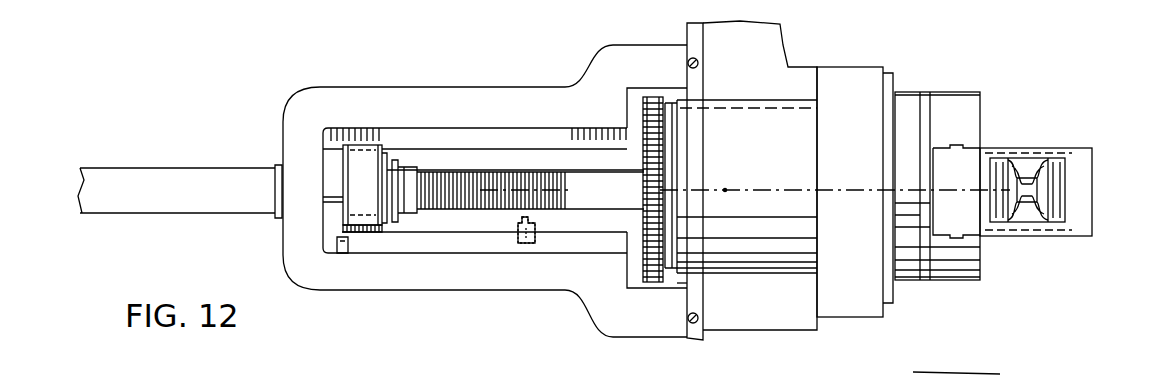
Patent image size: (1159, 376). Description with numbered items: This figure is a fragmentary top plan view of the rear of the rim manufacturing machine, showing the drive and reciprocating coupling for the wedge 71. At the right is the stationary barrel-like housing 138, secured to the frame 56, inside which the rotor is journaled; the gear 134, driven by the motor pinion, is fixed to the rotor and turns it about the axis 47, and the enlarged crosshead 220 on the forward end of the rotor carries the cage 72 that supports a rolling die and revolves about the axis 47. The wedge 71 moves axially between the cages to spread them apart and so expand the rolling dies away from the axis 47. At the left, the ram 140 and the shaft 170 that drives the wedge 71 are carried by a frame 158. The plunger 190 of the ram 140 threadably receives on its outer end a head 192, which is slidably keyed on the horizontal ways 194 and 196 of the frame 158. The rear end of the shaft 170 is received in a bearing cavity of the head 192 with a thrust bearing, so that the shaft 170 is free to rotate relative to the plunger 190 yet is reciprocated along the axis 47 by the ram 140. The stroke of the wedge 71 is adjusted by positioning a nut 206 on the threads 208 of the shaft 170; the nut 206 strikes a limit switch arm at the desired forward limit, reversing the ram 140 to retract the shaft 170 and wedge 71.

The axis 47 is at (727, 189).
The frame 56 is at (852, 306).
The reciprocating wedge 71 is at (1033, 153).
The cage 72 is at (1096, 194).
The gear 134 is at (654, 97).
The barrel-like housing 138 is at (780, 283).
The ram 140 is at (222, 204).
The frame 158 is at (350, 282).
The shaft 170 is at (582, 180).
The plunger 190 is at (335, 184).
The head 192 is at (370, 236).
The horizontal way 194 is at (457, 137).
The horizontal way 196 is at (562, 238).
The nut 206 is at (419, 167).
The threads 208 is at (435, 209).
The crosshead 220 is at (908, 281).